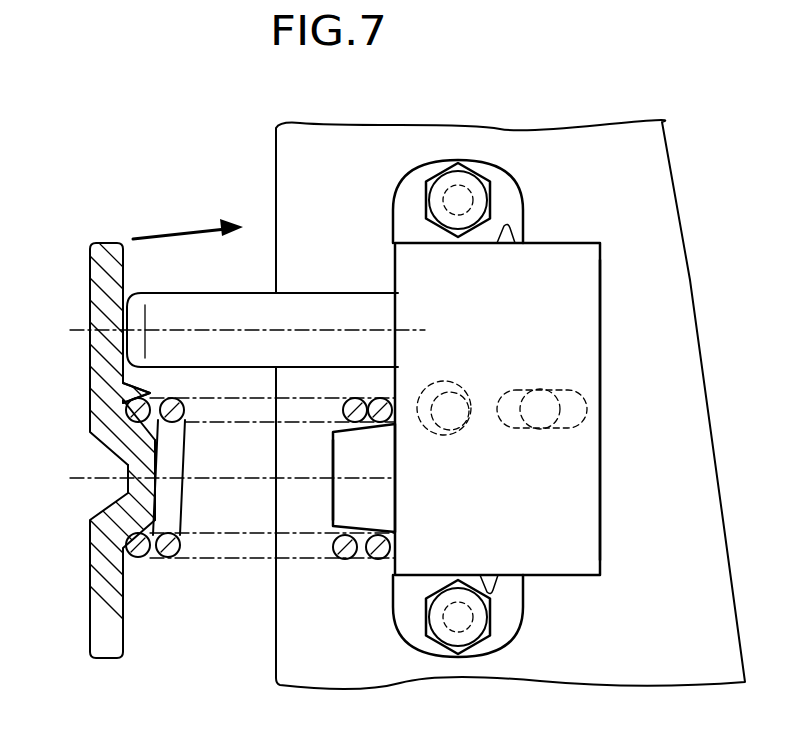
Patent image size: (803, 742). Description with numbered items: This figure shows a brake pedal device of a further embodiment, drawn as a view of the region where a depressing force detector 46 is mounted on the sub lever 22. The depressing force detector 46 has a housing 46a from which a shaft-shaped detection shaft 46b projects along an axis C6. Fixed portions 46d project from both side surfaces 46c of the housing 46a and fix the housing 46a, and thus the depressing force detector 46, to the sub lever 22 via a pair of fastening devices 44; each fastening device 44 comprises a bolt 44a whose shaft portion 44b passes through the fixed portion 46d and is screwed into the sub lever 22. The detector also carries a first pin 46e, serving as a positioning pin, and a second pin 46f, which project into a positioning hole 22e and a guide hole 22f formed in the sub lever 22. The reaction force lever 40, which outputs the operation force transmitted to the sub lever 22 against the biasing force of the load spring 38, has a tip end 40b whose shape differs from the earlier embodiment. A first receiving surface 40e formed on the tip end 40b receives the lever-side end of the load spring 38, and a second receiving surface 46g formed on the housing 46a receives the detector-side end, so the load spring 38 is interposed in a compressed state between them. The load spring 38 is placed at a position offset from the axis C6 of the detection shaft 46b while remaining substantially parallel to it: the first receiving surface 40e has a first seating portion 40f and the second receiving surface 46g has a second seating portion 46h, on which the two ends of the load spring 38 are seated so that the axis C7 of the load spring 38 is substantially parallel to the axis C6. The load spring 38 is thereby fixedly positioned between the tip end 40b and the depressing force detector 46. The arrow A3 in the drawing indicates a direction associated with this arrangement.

The sub lever 22 is at (473, 116).
The positioning hole 22e is at (437, 434).
The guide hole 22f is at (562, 428).
The load spring 38 is at (168, 560).
The reaction force lever 40 is at (108, 662).
The tip end 40b is at (105, 392).
The first receiving surface 40e is at (128, 388).
The first seating portion 40f is at (128, 488).
The fastening device 44 is at (425, 178).
The bolt 44a is at (478, 190).
The shaft portion 44b is at (440, 200).
The depressing force detector 46 is at (588, 241).
The housing 46a is at (601, 313).
The detection shaft 46b is at (245, 292).
The side surfaces 46c is at (512, 243).
The fixed portions 46d is at (418, 217).
The first pin 46e is at (450, 392).
The second pin 46f is at (540, 389).
The second receiving surface 46g is at (374, 464).
The second seating portion 46h is at (345, 463).
The axis of the detection shaft C6 is at (270, 330).
The axis of the load spring C7 is at (262, 478).
The direction A3 is at (188, 222).